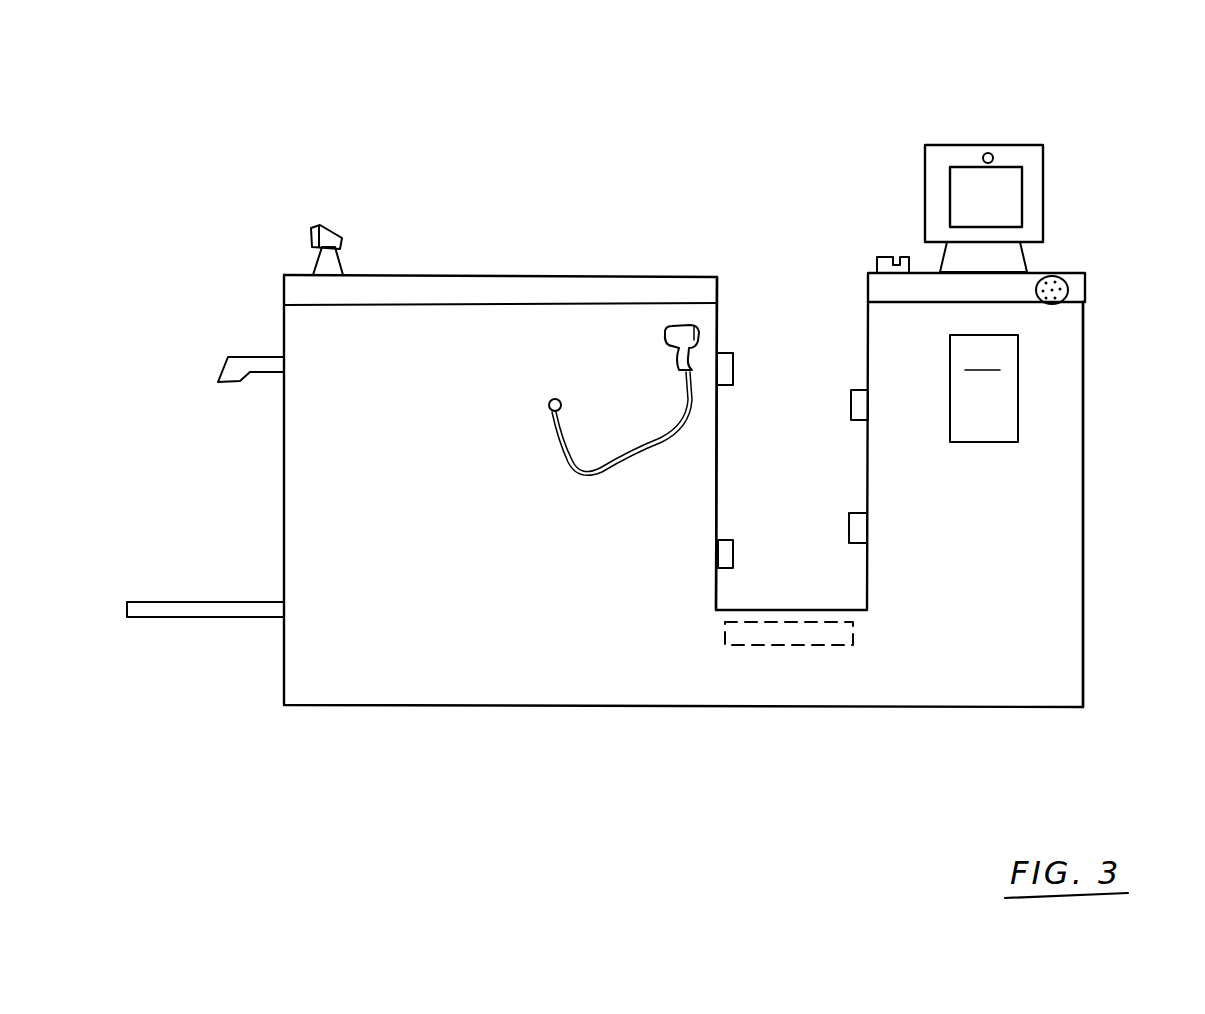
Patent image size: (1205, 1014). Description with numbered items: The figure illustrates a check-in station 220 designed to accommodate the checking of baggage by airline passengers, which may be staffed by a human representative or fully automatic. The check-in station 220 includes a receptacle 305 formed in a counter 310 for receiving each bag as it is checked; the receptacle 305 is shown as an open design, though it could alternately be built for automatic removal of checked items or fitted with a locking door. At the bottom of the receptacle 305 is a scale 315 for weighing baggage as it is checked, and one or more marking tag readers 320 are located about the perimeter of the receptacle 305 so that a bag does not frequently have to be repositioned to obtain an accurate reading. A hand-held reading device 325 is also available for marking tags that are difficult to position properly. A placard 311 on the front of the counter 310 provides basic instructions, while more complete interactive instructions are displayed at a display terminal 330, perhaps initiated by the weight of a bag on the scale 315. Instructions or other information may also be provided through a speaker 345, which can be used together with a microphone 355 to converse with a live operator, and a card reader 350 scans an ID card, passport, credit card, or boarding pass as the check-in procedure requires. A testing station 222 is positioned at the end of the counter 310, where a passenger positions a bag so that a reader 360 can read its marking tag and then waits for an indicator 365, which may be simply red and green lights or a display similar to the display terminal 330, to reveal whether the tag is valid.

The check-in station 220 is at (1128, 113).
The testing station 222 is at (126, 440).
The receptacle 305 is at (735, 313).
The counter 310 is at (1083, 405).
The placard 311 is at (1028, 368).
The scale 315 is at (810, 650).
The marking tag readers 320 is at (737, 367).
The hand-held reading device 325 is at (672, 330).
The display terminal 330 is at (1043, 191).
The speaker 345 is at (1068, 290).
The card reader 350 is at (887, 258).
The microphone 355 is at (993, 155).
The reader 360 is at (237, 356).
The indicator 365 is at (333, 226).